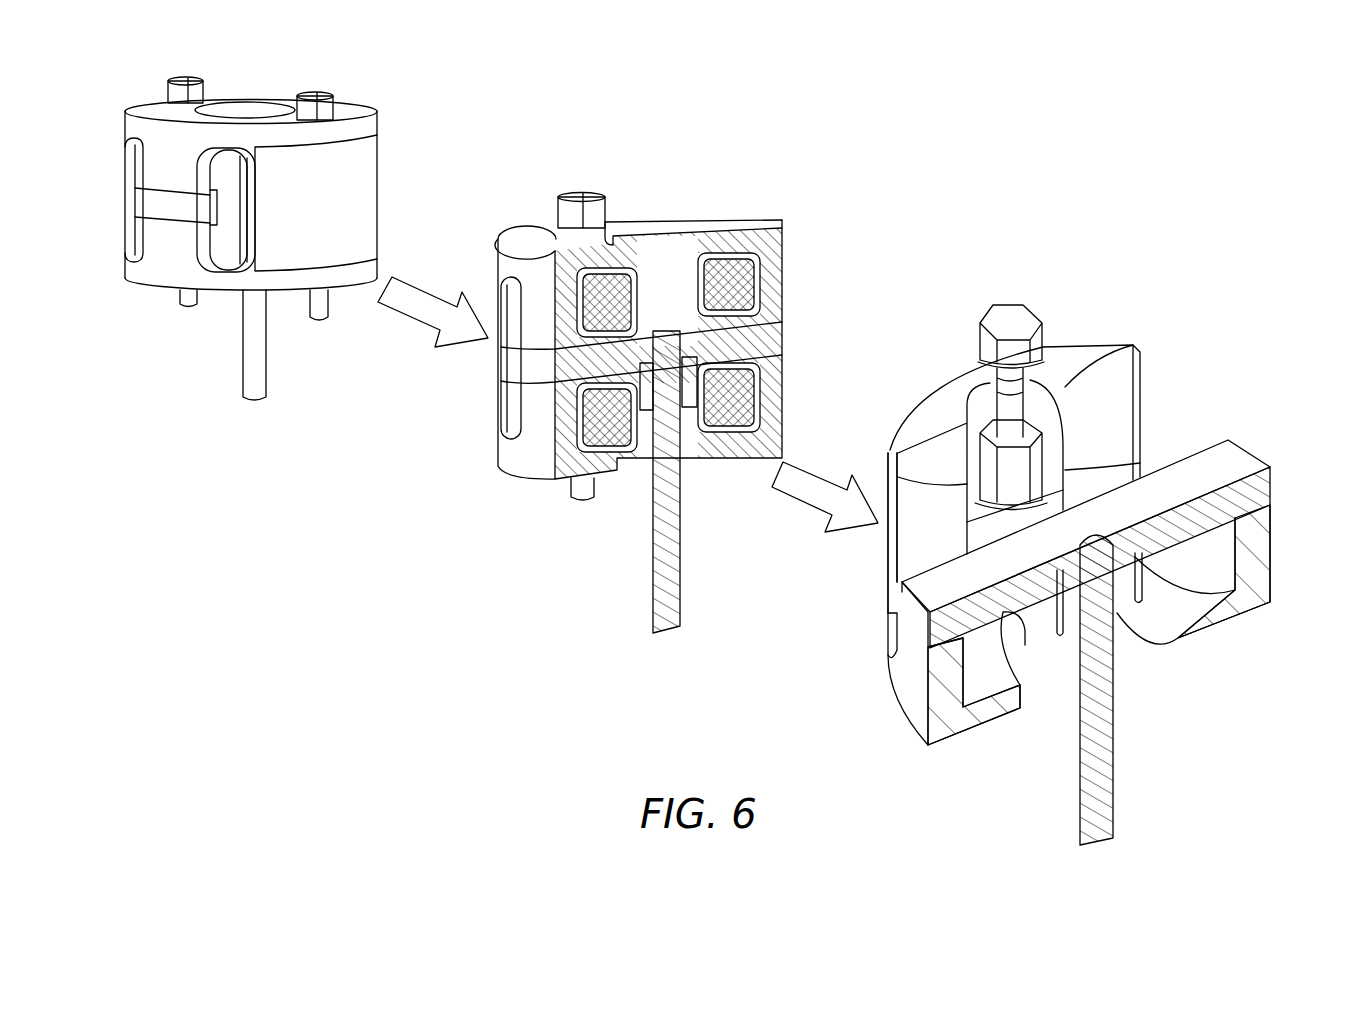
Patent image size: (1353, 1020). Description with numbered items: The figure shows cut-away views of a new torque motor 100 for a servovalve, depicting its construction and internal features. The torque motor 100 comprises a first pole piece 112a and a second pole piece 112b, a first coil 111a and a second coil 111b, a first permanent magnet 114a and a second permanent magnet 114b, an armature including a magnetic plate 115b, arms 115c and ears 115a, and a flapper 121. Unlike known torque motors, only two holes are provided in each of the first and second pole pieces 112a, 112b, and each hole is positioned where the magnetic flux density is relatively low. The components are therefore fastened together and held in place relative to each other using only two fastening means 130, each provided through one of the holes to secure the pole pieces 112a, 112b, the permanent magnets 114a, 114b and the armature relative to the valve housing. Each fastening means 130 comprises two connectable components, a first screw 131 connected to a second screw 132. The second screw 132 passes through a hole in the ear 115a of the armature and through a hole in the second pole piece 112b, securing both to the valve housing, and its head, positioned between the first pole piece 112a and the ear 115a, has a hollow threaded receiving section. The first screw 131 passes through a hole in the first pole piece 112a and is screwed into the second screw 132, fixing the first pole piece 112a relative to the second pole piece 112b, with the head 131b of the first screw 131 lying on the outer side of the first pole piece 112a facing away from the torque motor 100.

The torque motor 100 is at (391, 71).
The first coil 111a is at (130, 165).
The second coil 111b is at (762, 280).
The first pole piece 112a is at (146, 97).
The second pole piece 112b is at (146, 290).
The first permanent magnet 114a is at (888, 565).
The second permanent magnet 114b is at (372, 177).
The ear 115a is at (888, 478).
The magnetic plate 115b is at (130, 203).
The arm 115c is at (1045, 500).
The flapper 121 is at (252, 400).
The fastening means 130 is at (1090, 293).
The first screw 131 is at (183, 76).
The head of the first screw 131b is at (204, 86).
The second screw 132 is at (186, 306).